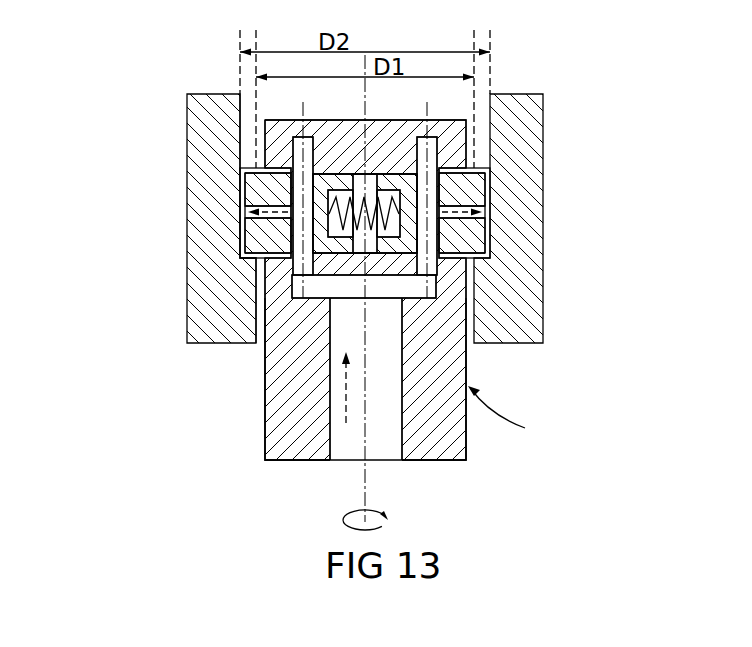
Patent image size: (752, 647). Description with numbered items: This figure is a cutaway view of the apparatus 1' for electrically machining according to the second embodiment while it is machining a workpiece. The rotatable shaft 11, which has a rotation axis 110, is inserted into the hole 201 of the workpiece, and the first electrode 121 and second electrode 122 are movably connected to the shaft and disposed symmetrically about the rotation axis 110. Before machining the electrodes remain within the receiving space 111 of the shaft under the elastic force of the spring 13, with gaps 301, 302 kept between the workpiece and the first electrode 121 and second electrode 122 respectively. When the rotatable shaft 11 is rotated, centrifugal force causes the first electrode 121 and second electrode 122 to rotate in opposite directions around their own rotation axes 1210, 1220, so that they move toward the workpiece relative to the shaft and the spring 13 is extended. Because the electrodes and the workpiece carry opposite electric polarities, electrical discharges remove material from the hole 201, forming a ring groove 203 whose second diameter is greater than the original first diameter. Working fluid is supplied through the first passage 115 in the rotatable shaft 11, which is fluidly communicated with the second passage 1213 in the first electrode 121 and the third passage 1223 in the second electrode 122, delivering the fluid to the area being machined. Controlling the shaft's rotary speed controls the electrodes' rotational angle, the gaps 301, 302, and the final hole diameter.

The apparatus for electrically machining 1' is at (507, 417).
The rotatable shaft 11 is at (267, 394).
The spring 13 is at (392, 204).
The rotation axis 110 is at (368, 477).
The receiving space 111 is at (372, 243).
The first passage 115 is at (358, 437).
The first electrode 121 is at (248, 198).
The second electrode 122 is at (476, 188).
The hole 201 is at (417, 112).
The ring groove 203 is at (260, 170).
The gap 301 is at (263, 191).
The gap 302 is at (492, 202).
The rotation axis of first electrode 1210 is at (302, 108).
The second passage 1213 is at (250, 212).
The rotation axis of second electrode 1220 is at (430, 112).
The third passage 1223 is at (497, 211).